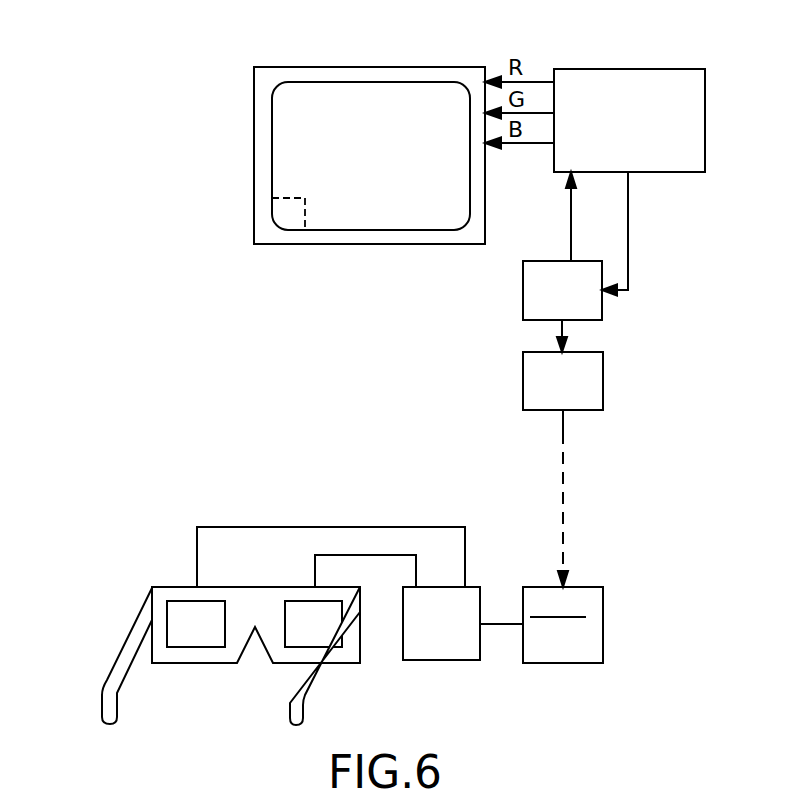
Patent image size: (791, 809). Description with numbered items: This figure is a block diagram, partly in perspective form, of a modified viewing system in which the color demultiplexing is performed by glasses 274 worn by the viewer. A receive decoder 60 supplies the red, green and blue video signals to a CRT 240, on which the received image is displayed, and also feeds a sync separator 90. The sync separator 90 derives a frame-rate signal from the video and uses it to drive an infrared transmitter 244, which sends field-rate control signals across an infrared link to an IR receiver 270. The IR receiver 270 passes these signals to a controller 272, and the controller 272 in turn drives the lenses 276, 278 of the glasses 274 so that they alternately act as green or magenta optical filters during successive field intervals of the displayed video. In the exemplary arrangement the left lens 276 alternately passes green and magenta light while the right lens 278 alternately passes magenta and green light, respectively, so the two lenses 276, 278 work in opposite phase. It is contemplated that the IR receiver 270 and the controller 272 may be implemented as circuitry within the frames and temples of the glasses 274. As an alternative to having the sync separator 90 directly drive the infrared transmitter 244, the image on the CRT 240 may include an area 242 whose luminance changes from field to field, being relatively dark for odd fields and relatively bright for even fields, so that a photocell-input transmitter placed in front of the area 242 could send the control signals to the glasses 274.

The CRT 240 is at (290, 67).
The area 242 is at (288, 221).
The receive decoder 60 is at (667, 69).
The sync separator 90 is at (603, 311).
The infrared transmitter 244 is at (603, 388).
The IR receiver 270 is at (603, 628).
The controller 272 is at (448, 661).
The glasses 274 is at (231, 630).
The left lens 276 is at (192, 640).
The right lens 278 is at (297, 637).